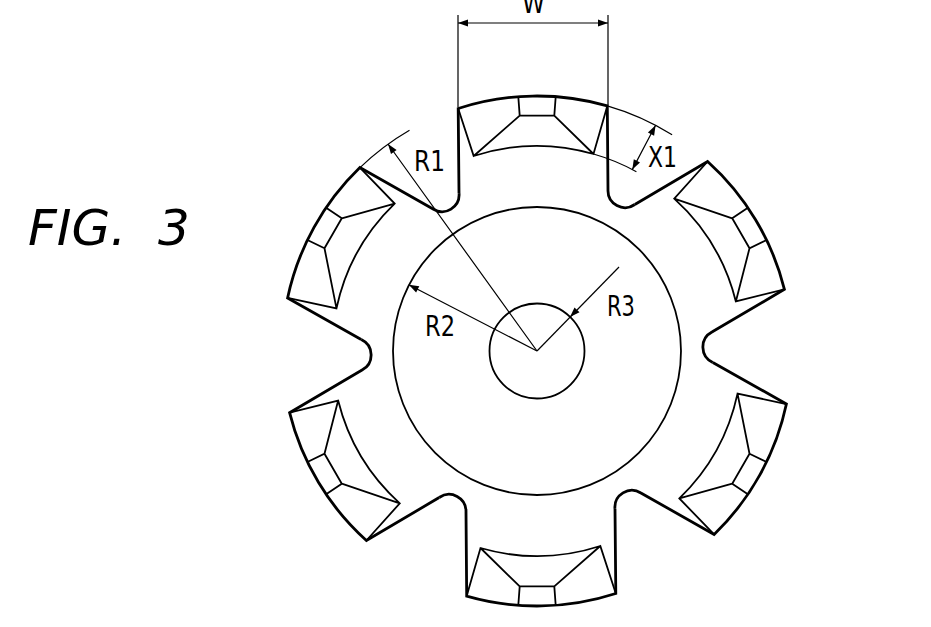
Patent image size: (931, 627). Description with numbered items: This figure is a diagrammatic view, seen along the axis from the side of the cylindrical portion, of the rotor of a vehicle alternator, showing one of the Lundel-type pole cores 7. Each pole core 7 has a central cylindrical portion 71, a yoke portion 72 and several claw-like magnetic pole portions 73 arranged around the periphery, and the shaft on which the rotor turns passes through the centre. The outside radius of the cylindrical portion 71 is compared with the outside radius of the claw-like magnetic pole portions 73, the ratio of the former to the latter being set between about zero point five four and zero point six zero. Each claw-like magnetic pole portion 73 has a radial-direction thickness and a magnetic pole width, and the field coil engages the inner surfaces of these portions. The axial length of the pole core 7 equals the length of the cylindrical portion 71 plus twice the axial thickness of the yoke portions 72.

The pole core 7 is at (748, 507).
The cylindrical portion 71 is at (587, 468).
The yoke portion 72 is at (587, 183).
The claw-like magnetic pole portion 73 is at (590, 98).